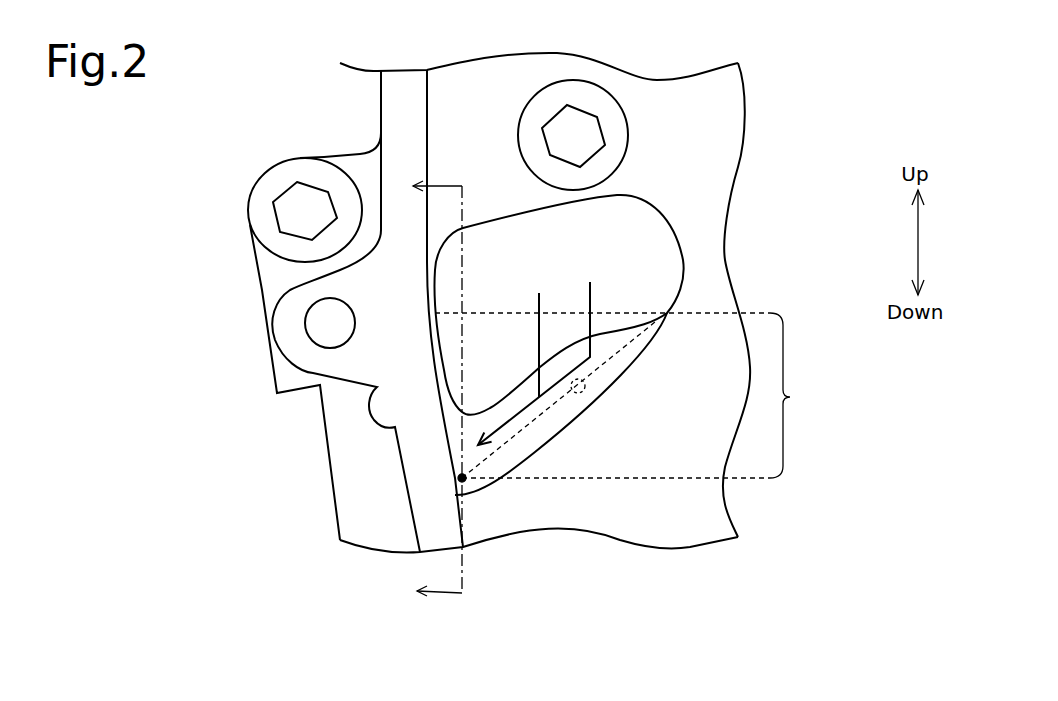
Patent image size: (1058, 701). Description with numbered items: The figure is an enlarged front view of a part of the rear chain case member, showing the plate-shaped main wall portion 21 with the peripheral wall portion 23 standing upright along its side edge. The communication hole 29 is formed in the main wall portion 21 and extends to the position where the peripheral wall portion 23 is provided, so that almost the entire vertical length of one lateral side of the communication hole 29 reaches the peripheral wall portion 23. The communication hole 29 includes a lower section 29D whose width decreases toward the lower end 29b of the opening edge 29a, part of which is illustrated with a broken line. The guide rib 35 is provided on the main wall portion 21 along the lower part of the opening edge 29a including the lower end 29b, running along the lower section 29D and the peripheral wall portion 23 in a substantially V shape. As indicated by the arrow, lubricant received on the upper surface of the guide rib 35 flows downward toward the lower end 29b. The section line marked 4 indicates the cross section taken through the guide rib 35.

The main wall portion 21 is at (723, 125).
The peripheral wall portion 23 is at (412, 531).
The communication hole 29 is at (672, 232).
The opening edge 29a is at (586, 388).
The lower end 29b is at (466, 482).
The lower section 29D is at (639, 395).
The guide rib 35 is at (502, 398).
The section line of FIG. 4 is at (428, 390).